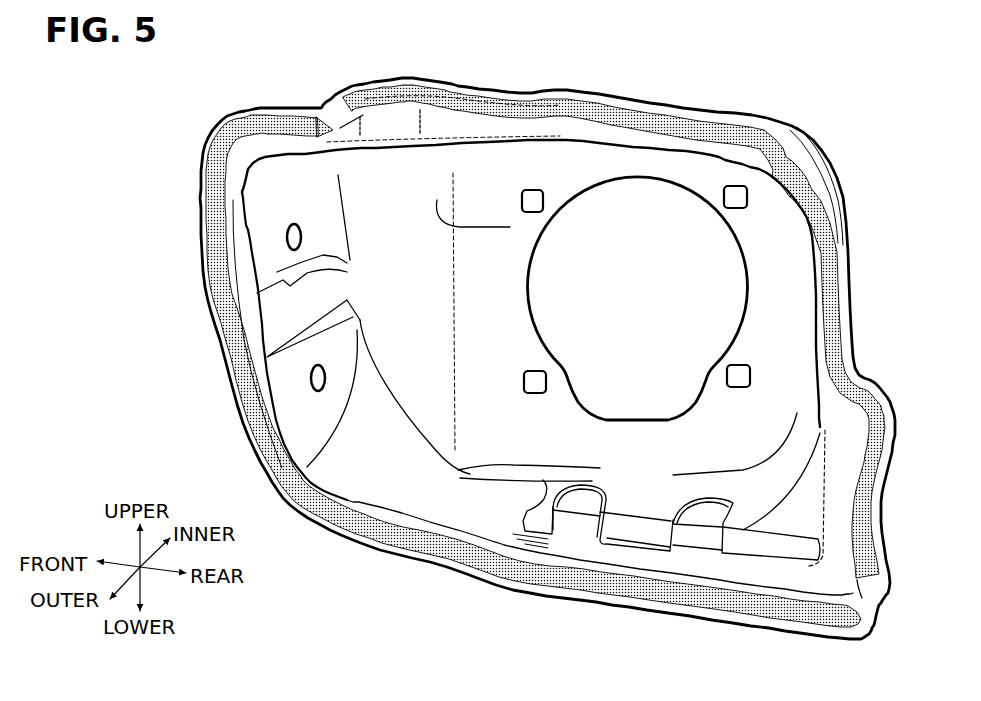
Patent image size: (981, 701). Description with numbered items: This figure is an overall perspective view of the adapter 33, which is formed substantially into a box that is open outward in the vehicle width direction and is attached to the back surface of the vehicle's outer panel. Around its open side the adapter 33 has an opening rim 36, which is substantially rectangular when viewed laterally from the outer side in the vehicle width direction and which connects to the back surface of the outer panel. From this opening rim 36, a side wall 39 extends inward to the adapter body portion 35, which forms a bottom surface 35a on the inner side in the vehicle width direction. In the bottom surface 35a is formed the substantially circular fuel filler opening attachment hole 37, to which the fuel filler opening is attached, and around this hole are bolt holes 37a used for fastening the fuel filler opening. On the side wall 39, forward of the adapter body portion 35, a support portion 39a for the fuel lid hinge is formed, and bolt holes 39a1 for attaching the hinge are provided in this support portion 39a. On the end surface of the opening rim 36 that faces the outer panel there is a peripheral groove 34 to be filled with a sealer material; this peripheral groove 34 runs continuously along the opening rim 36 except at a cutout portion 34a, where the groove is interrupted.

The adapter 33 is at (814, 104).
The peripheral groove 34 is at (437, 83).
The cutout portion 34a is at (331, 116).
The adapter body portion 35 is at (777, 268).
The bottom surface 35a is at (437, 200).
The opening rim 36 is at (803, 163).
The fuel filler opening attachment hole 37 is at (670, 185).
The bolt holes 37a is at (532, 187).
The side wall 39 is at (389, 478).
The support portion 39a is at (310, 180).
The bolt holes 39a1 is at (287, 232).